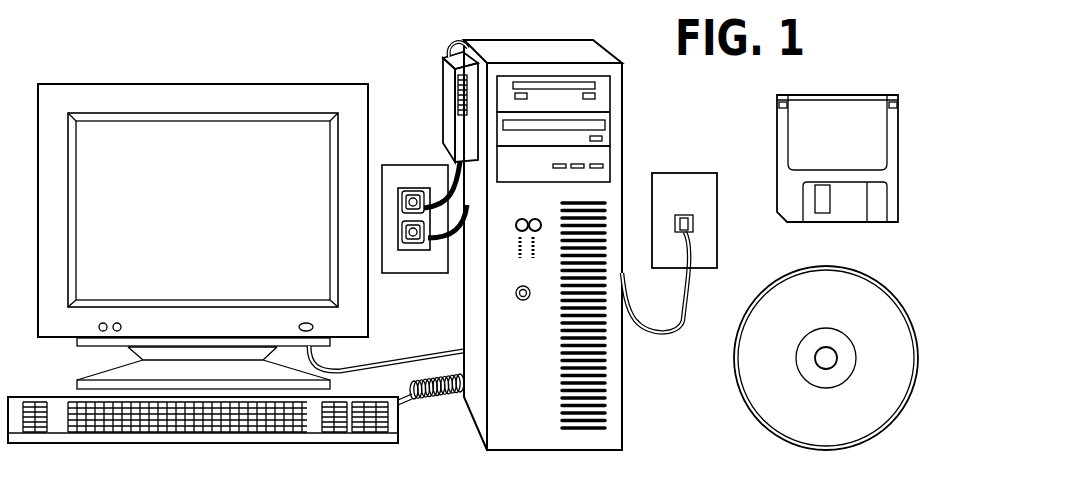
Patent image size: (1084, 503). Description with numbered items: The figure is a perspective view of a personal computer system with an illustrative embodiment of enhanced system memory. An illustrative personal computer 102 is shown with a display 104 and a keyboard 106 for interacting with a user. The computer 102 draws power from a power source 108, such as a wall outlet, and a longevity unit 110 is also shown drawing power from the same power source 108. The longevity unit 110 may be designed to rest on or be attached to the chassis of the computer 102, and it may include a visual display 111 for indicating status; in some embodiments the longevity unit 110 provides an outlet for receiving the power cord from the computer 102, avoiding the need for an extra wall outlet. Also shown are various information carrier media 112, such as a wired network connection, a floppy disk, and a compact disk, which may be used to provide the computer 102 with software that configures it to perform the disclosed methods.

The personal computer 102 is at (466, 285).
The display 104 is at (62, 338).
The keyboard 106 is at (55, 443).
The power source 108 is at (411, 192).
The longevity unit 110 is at (429, 133).
The visual display 111 is at (458, 100).
The information carrier media 112 is at (777, 192).